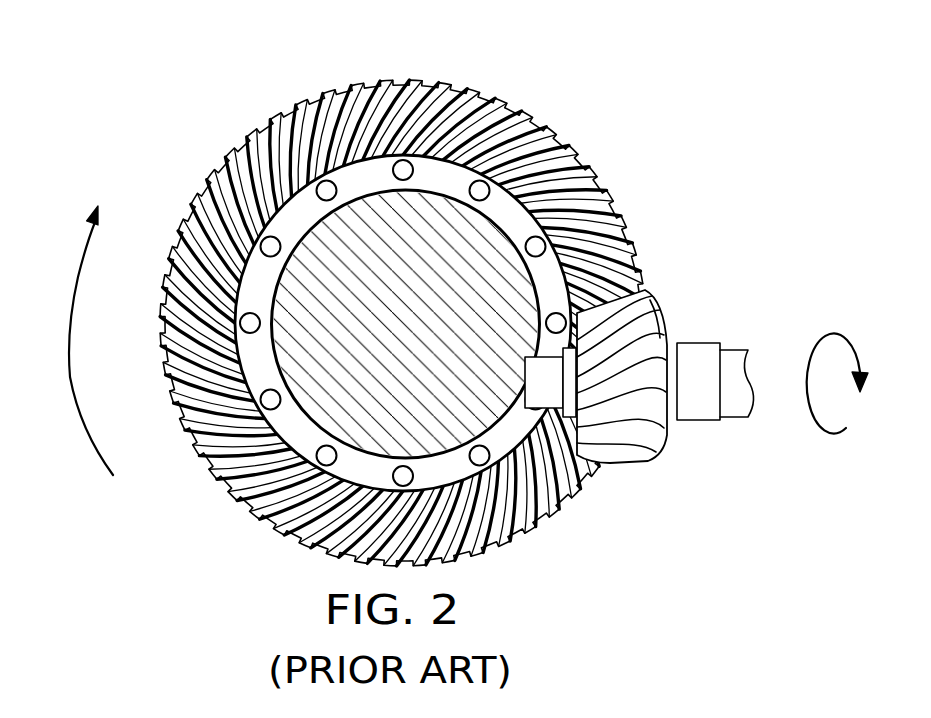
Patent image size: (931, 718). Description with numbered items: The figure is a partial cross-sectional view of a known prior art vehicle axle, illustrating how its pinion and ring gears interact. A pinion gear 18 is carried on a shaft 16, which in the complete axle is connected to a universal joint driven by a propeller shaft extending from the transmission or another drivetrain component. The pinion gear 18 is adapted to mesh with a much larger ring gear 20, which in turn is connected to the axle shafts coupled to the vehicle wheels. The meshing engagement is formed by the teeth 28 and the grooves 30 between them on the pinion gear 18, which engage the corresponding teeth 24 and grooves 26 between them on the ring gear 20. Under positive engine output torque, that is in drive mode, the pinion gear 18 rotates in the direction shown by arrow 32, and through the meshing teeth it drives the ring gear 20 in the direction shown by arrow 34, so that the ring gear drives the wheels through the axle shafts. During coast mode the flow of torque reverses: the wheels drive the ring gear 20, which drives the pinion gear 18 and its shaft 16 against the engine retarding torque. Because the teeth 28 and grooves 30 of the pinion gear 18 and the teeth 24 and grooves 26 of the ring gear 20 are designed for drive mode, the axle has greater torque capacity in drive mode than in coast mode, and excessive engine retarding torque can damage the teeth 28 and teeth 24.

The shaft 16 is at (745, 343).
The pinion gear 18 is at (672, 447).
The ring gear 20 is at (503, 101).
The teeth 24 is at (610, 192).
The grooves 26 is at (432, 84).
The teeth 28 is at (644, 291).
The grooves 30 is at (655, 332).
The arrow 32 is at (851, 383).
The arrow 34 is at (73, 340).